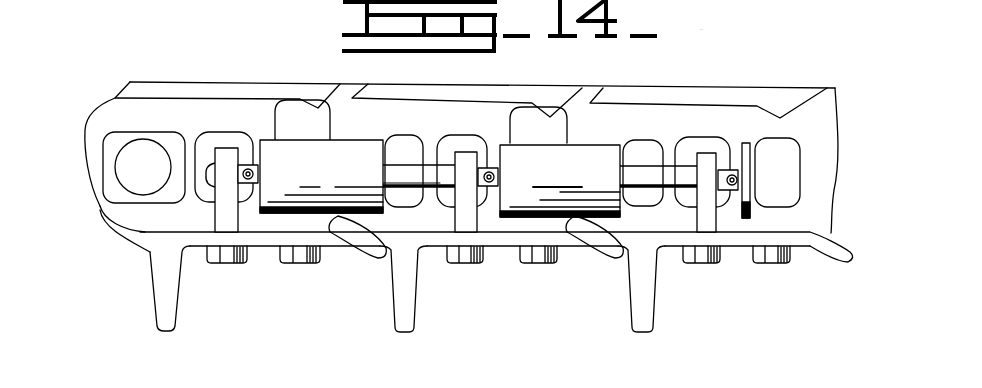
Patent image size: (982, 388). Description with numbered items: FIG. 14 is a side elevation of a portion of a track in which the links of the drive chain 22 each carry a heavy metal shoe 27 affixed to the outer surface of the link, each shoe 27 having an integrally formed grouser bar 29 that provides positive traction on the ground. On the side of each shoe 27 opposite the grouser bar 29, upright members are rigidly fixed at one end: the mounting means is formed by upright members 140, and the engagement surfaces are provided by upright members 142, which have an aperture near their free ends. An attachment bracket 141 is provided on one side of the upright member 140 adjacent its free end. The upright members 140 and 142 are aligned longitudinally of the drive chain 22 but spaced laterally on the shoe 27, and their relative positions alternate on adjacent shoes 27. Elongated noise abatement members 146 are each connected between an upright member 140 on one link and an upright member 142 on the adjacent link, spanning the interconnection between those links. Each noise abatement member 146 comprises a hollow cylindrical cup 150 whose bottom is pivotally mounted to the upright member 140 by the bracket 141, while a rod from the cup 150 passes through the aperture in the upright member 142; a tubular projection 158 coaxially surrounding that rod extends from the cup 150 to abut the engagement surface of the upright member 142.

The drive chain 22 is at (96, 206).
The shoe 27 is at (257, 242).
The grouser bar 29 is at (165, 308).
The upright member 140 is at (466, 152).
The attachment bracket 141 is at (257, 155).
The upright member 142 is at (187, 130).
The elongated noise abatement member 146 is at (322, 224).
The cylindrical cup 150 is at (291, 152).
The tubular projection 158 is at (394, 165).